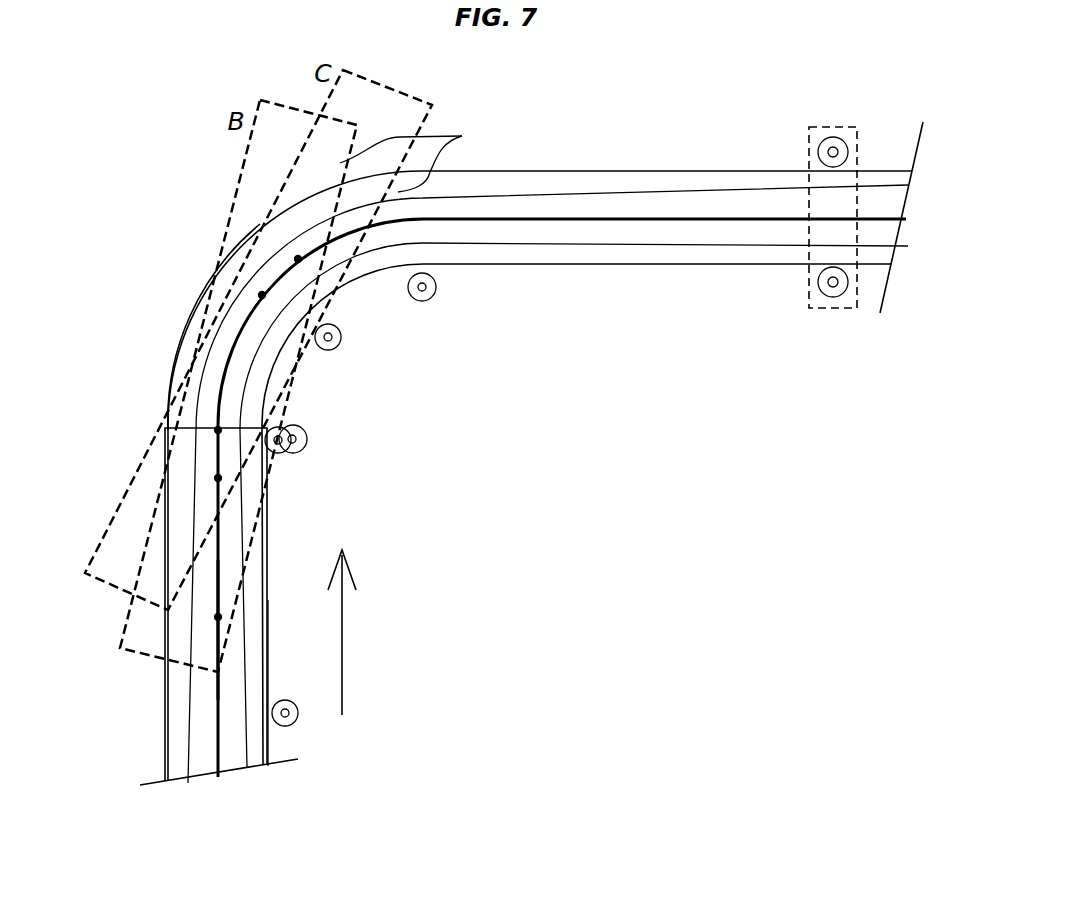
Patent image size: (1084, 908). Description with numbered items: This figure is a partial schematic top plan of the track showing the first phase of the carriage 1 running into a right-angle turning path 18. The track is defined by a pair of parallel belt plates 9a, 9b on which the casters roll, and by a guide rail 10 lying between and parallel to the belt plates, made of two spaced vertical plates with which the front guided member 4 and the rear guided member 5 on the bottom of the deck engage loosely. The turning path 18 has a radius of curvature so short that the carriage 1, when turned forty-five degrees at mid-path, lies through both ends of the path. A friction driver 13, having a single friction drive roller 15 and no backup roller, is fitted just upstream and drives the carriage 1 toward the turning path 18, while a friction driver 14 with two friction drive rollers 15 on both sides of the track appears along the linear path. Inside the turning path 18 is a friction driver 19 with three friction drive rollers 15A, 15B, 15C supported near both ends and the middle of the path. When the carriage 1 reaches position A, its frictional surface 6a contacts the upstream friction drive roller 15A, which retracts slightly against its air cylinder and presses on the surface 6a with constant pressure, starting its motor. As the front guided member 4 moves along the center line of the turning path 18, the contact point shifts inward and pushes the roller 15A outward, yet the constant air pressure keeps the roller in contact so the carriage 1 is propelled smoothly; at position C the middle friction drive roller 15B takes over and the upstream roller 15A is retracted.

The carriage 1 is at (280, 197).
The front guided member 4 is at (298, 259).
The rear guided member 5 is at (214, 429).
The frictional surface 6a is at (450, 141).
The belt plate 9a is at (578, 257).
The belt plate 9b is at (600, 178).
The guide rail 10 is at (216, 388).
The friction driver 13 is at (305, 722).
The friction driver 14 is at (834, 311).
The friction drive roller 15 is at (818, 150).
The upstream friction drive roller 15A is at (282, 453).
The middle friction drive roller 15B is at (337, 349).
The friction drive roller 15C is at (425, 301).
The turning path 18 is at (200, 305).
The friction driver 19 is at (450, 287).